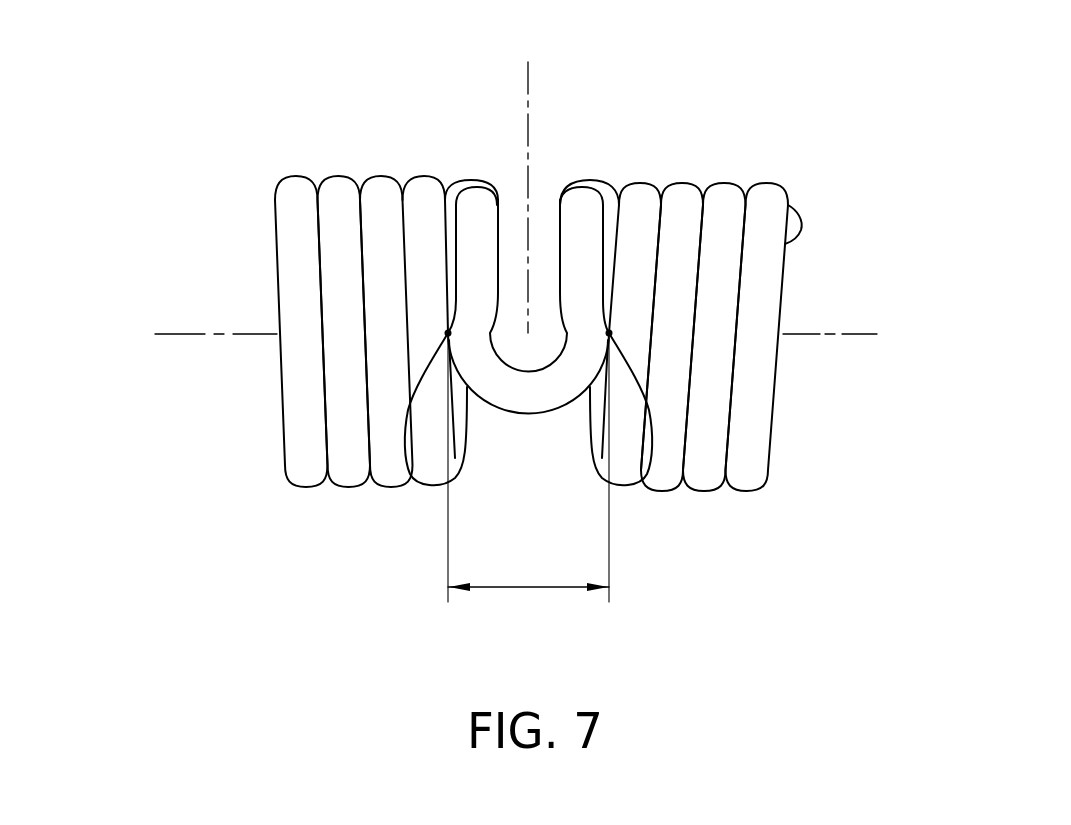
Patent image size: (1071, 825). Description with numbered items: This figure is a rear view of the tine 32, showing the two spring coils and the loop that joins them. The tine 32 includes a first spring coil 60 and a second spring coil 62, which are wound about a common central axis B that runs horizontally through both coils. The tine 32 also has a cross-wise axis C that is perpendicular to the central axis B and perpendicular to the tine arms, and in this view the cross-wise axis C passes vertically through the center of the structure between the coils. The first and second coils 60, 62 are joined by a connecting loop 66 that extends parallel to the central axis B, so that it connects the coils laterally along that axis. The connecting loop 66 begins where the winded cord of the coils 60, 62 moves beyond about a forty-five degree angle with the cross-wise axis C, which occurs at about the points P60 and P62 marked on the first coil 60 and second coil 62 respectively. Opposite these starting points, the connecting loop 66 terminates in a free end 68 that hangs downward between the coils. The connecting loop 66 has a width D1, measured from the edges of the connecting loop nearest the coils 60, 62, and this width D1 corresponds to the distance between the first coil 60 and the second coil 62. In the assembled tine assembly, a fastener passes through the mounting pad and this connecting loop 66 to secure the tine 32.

The tine 32 is at (336, 98).
The first spring coil 60 is at (772, 378).
The second spring coil 62 is at (291, 402).
The connecting loop 66 is at (499, 371).
The free end 68 is at (520, 416).
The point P62 is at (414, 478).
The point P60 is at (648, 478).
The width of the connecting loop D1 is at (531, 589).
The central axis B is at (183, 335).
The cross-wise axis C is at (530, 78).